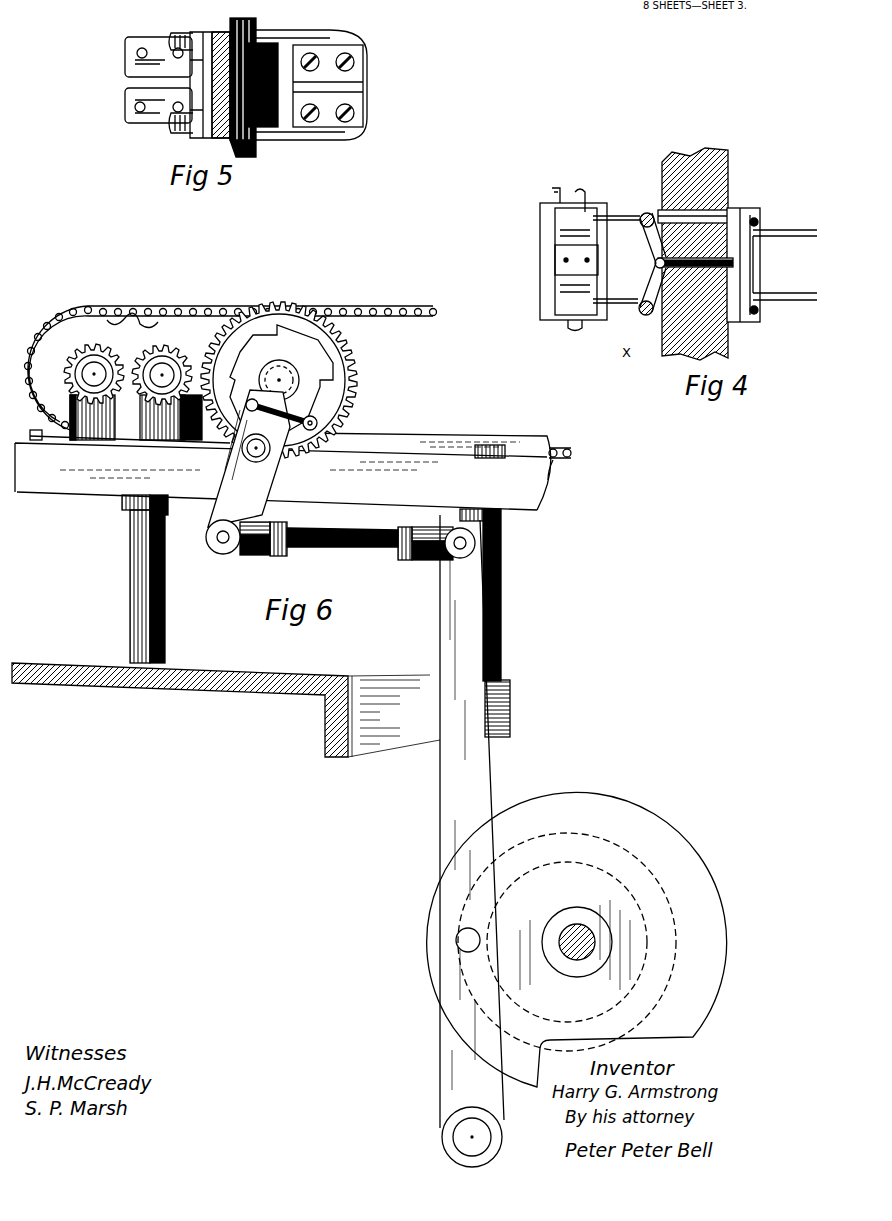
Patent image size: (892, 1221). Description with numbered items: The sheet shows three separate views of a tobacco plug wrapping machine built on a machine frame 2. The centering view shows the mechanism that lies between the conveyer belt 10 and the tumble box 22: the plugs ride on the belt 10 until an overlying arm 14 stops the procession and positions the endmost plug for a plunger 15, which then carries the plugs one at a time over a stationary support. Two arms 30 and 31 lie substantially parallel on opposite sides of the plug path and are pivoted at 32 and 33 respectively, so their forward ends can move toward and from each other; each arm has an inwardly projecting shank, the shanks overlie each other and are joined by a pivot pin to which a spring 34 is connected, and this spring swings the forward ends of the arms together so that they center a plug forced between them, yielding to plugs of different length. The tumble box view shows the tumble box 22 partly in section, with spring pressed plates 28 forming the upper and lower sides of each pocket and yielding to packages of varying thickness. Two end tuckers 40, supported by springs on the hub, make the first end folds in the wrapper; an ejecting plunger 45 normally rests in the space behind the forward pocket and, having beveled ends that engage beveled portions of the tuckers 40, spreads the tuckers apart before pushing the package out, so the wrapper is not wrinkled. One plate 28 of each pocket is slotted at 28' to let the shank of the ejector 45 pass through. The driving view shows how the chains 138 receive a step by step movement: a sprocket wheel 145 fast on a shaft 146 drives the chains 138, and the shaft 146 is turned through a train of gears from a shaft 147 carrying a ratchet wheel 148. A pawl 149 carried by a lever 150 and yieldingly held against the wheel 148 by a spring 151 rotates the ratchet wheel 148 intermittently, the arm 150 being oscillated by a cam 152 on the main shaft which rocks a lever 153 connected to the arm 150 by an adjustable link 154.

In FIG. 6, the machine frame 2 is at (218, 685).
In FIG. 4, the conveyer belt 10 is at (668, 167).
In FIG. 4, the arm 14 is at (732, 212).
In FIG. 4, the plunger 15 is at (783, 237).
In FIG. 5, the tumble box 22 is at (315, 45).
In FIG. 5, the spring pressed plates 28 is at (341, 86).
In FIG. 5, the slot 28' is at (135, 80).
In FIG. 4, the arm 30 is at (612, 215).
In FIG. 4, the arm 31 is at (605, 320).
In FIG. 4, the pivot 32 is at (652, 212).
In FIG. 4, the pivot 33 is at (637, 320).
In FIG. 4, the spring 34 is at (738, 275).
In FIG. 5, the end tuckers 40 is at (202, 33).
In FIG. 5, the ejecting plunger 45 is at (203, 80).
In FIG. 6, the chains 138 is at (370, 323).
In FIG. 6, the sprocket wheel 145 is at (112, 320).
In FIG. 6, the shaft 146 is at (58, 330).
In FIG. 6, the shaft 147 is at (283, 378).
In FIG. 6, the ratchet wheel 148 is at (320, 408).
In FIG. 6, the pawl 149 is at (298, 438).
In FIG. 6, the lever 150 is at (222, 477).
In FIG. 6, the spring 151 is at (299, 409).
In FIG. 6, the cam 152 is at (648, 823).
In FIG. 6, the lever 153 is at (480, 762).
In FIG. 6, the adjustable link 154 is at (343, 548).